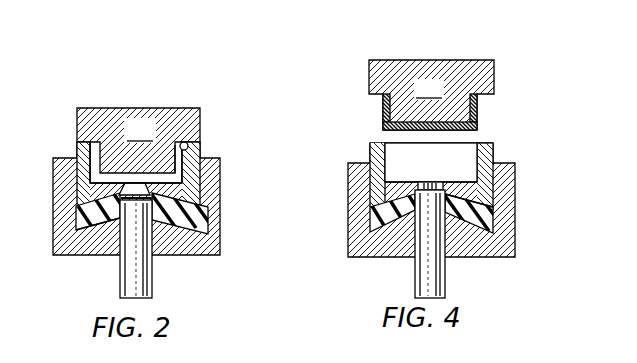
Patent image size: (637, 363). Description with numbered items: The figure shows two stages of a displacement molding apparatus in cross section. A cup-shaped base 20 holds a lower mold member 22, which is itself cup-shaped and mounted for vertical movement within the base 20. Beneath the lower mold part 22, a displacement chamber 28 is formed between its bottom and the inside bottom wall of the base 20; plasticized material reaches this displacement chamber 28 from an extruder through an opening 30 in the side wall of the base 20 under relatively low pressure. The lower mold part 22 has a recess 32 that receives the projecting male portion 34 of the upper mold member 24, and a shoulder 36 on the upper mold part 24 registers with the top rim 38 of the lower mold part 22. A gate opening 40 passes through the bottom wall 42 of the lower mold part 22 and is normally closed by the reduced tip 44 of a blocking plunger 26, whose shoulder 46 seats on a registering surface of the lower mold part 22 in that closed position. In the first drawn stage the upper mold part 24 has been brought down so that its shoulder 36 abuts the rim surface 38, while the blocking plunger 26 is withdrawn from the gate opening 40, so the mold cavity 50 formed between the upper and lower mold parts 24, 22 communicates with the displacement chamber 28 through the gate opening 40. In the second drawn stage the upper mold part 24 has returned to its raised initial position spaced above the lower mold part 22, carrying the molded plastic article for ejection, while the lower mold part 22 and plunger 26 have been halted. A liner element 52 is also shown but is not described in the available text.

In FIG. 2, the base 20 is at (53, 211).
In FIG. 4, the base 20 is at (348, 211).
In FIG. 2, the lower mold member 22 is at (77, 148).
In FIG. 4, the lower mold member 22 is at (368, 152).
In FIG. 2, the upper mold member 24 is at (200, 110).
In FIG. 4, the upper mold member 24 is at (494, 63).
In FIG. 2, the blocking plunger 26 is at (153, 283).
In FIG. 4, the blocking plunger 26 is at (447, 278).
In FIG. 2, the displacement chamber 28 is at (210, 216).
In FIG. 4, the displacement chamber 28 is at (487, 213).
In FIG. 2, the opening 30 is at (213, 226).
In FIG. 4, the opening 30 is at (503, 228).
In FIG. 4, the recess 32 is at (398, 146).
In FIG. 2, the projecting male portion 34 is at (140, 130).
In FIG. 4, the projecting male portion 34 is at (429, 88).
In FIG. 2, the shoulder 36 is at (200, 134).
In FIG. 4, the shoulder 36 is at (487, 96).
In FIG. 2, the top rim 38 is at (190, 146).
In FIG. 4, the top rim 38 is at (488, 143).
In FIG. 2, the gate opening 40 is at (133, 182).
In FIG. 4, the gate opening 40 is at (421, 182).
In FIG. 2, the bottom wall 42 is at (103, 187).
In FIG. 4, the bottom wall 42 is at (393, 197).
In FIG. 4, the reduced tip 44 is at (445, 178).
In FIG. 2, the shoulder 46 is at (116, 210).
In FIG. 4, the shoulder 46 is at (478, 210).
In FIG. 2, the mold cavity 50 is at (177, 170).
In FIG. 4, the bottom liner 52 is at (478, 127).